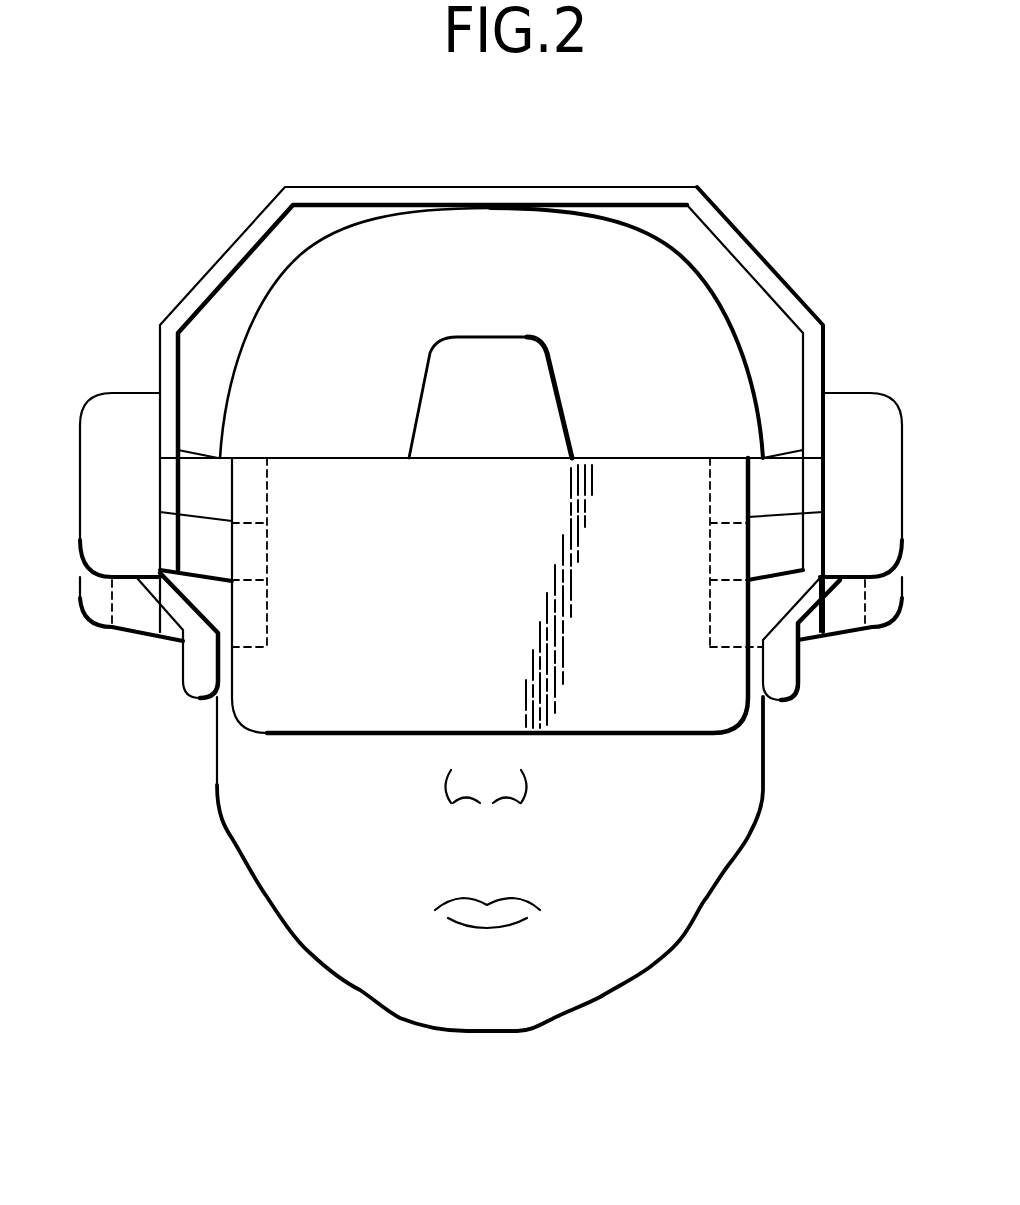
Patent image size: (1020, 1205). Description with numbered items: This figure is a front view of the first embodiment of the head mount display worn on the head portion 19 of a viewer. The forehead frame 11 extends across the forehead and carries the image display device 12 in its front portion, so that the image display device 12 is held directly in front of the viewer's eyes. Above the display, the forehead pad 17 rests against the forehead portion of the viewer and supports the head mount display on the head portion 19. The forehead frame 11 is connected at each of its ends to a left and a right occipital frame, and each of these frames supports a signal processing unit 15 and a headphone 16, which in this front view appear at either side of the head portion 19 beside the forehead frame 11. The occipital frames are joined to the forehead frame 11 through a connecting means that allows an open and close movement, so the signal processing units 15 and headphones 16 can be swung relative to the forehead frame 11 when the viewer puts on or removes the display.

The forehead frame 11 is at (788, 285).
The image display device 12 is at (623, 458).
The signal processing unit 15 is at (97, 398).
The headphone 16 is at (195, 690).
The forehead pad 17 is at (553, 357).
The head portion of a viewer 19 is at (730, 872).